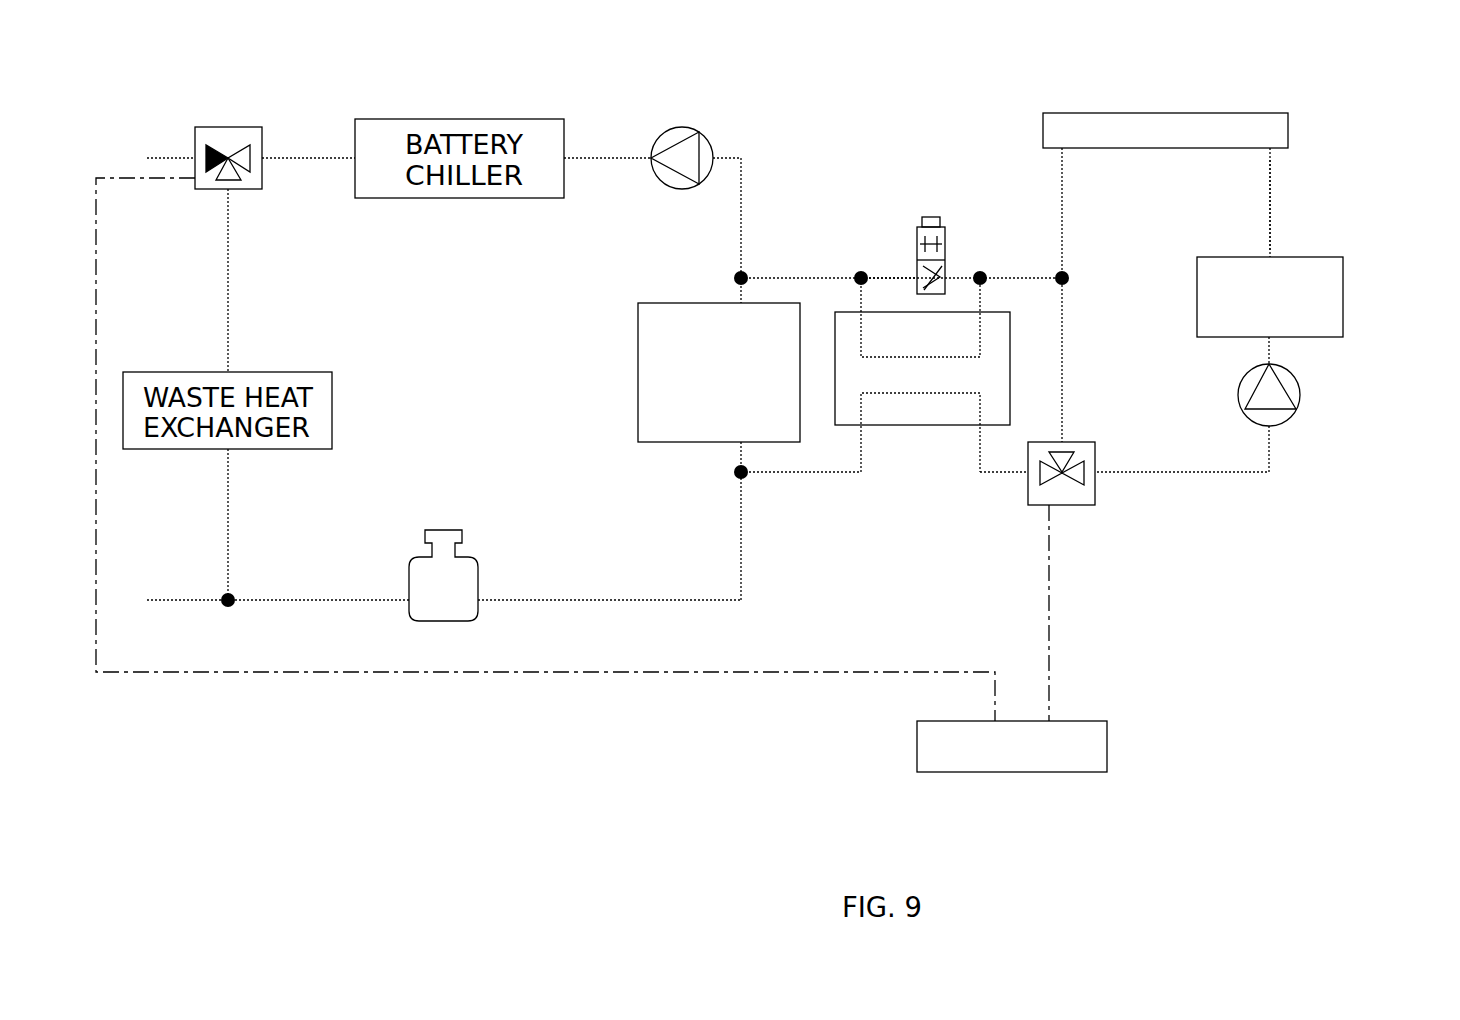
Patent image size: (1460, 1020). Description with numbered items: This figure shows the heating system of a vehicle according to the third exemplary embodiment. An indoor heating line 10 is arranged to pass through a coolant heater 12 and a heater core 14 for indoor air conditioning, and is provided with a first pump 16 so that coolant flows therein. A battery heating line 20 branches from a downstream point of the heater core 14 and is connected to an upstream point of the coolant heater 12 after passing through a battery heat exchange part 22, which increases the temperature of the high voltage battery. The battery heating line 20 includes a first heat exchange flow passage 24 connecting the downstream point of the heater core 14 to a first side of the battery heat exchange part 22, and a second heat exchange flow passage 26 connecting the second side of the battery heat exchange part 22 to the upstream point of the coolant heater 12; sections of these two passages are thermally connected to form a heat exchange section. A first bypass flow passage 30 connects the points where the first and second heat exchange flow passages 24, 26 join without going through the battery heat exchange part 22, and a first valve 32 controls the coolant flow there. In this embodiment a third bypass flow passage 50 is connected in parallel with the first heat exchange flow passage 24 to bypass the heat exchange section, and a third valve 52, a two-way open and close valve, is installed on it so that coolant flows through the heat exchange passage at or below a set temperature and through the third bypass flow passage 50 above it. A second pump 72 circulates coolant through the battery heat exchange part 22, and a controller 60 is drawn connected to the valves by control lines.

The indoor heating line 10 is at (1270, 203).
The coolant heater 12 is at (1343, 298).
The heater core 14 is at (1165, 113).
The first pump 16 is at (1300, 393).
The battery heating line 20 is at (922, 437).
The battery heat exchange part 22 is at (638, 375).
The first heat exchange flow passage 24 is at (807, 276).
The second heat exchange flow passage 26 is at (800, 474).
The first bypass flow passage 30 is at (1062, 356).
The first valve 32 is at (1070, 480).
The third bypass flow passage 50 is at (886, 276).
The third valve 52 is at (932, 217).
The controller 60 is at (1107, 745).
The second pump 72 is at (682, 127).